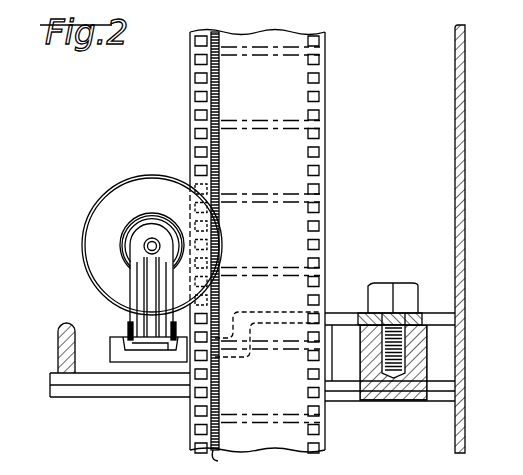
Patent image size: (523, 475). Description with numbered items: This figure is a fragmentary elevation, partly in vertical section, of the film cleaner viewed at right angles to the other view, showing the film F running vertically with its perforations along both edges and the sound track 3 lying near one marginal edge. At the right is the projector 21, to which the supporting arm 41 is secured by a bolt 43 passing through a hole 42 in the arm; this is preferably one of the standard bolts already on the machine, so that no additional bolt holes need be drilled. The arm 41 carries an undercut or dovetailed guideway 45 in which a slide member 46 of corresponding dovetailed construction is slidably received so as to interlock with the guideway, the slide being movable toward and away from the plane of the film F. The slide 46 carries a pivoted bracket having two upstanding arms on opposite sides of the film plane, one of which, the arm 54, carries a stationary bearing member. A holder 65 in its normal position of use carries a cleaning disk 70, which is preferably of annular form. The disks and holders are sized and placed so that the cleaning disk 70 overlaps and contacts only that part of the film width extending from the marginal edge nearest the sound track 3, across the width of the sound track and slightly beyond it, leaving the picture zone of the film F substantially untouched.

The film F is at (370, 112).
The sound track 3 is at (217, 33).
The projector 21 is at (436, 239).
The supporting arm 41 is at (147, 358).
The hole 42 is at (416, 318).
The bolt 43 is at (402, 283).
The guideway 45 is at (110, 344).
The slide member 46 is at (128, 340).
The upstanding arm 54 is at (140, 256).
The holder 65 is at (100, 233).
The cleaning disk 70 is at (106, 195).